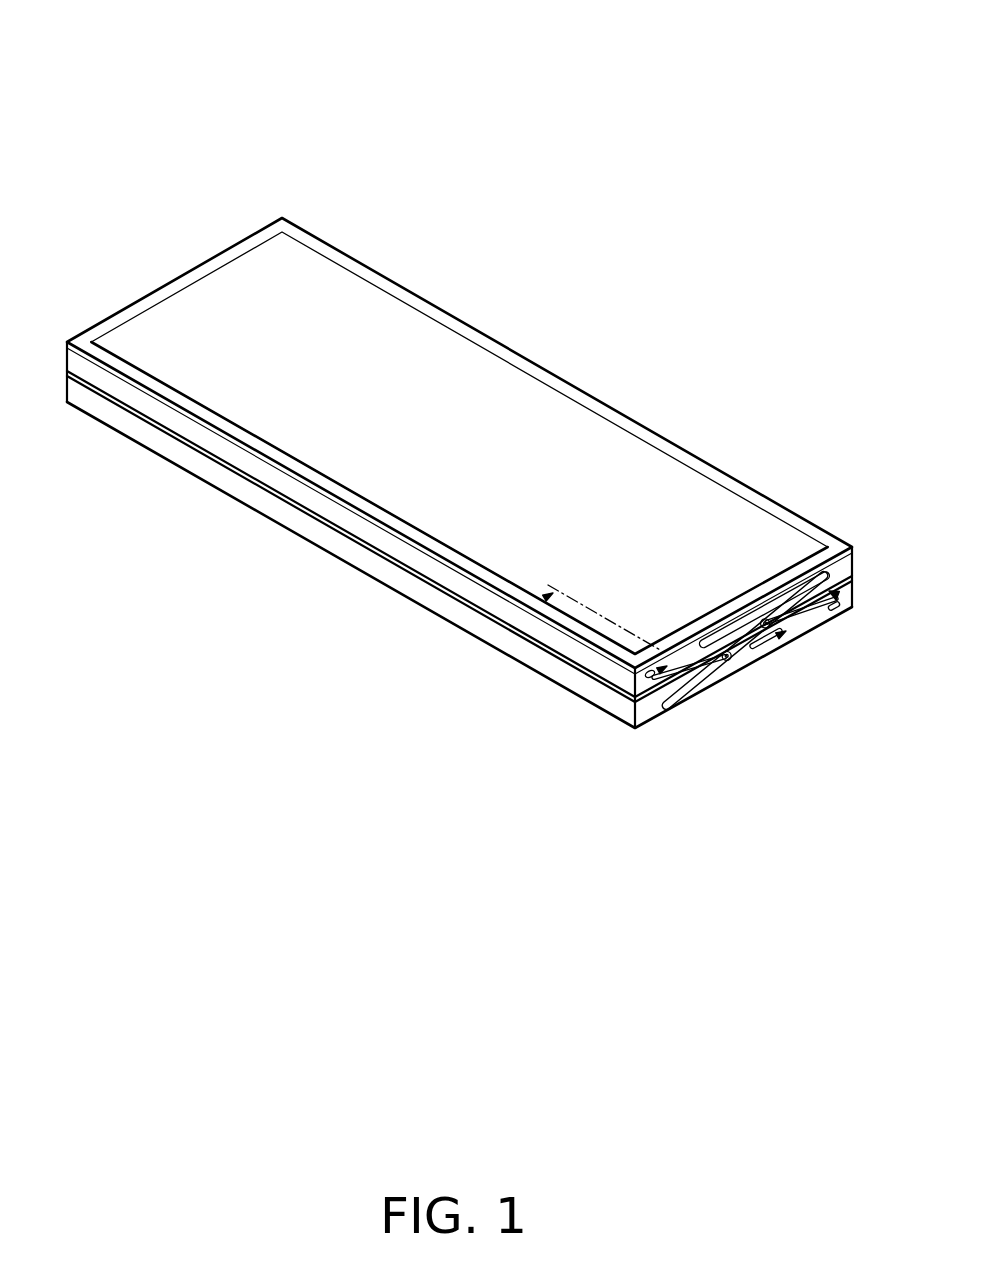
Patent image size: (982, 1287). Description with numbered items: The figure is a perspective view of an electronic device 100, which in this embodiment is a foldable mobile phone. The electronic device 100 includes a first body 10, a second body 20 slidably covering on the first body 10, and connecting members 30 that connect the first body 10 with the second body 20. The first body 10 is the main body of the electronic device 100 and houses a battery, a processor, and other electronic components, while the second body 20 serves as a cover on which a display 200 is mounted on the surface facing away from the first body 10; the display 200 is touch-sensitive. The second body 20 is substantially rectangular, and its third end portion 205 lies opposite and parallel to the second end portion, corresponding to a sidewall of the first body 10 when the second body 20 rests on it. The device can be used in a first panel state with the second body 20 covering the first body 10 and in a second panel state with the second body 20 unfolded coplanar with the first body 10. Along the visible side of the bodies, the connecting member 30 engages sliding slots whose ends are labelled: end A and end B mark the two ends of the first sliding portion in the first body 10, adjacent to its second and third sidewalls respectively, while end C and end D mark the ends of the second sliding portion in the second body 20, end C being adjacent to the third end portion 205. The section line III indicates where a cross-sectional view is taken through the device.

The electronic device 100 is at (418, 28).
The second body 20 is at (465, 330).
The display 200 is at (552, 447).
The third end portion 205 is at (685, 448).
The first body 10 is at (400, 577).
The connecting member 30 is at (705, 677).
The end A of first sliding portion A is at (735, 657).
The end B of first sliding portion B is at (842, 595).
The end C of second sliding portion C is at (770, 624).
The end D of second sliding portion D is at (639, 686).
The section line III- III is at (546, 598).